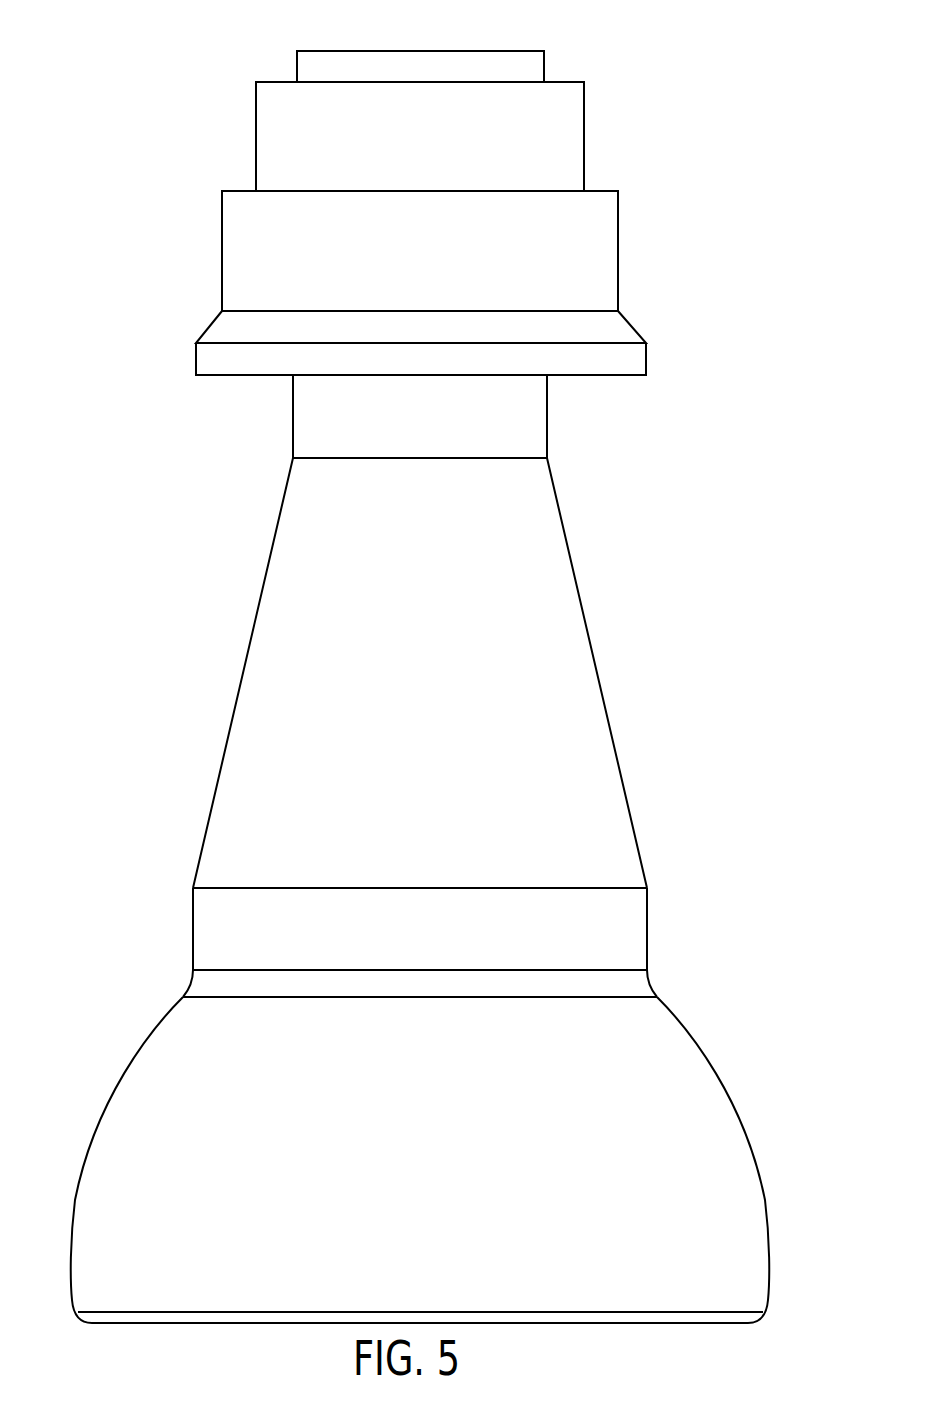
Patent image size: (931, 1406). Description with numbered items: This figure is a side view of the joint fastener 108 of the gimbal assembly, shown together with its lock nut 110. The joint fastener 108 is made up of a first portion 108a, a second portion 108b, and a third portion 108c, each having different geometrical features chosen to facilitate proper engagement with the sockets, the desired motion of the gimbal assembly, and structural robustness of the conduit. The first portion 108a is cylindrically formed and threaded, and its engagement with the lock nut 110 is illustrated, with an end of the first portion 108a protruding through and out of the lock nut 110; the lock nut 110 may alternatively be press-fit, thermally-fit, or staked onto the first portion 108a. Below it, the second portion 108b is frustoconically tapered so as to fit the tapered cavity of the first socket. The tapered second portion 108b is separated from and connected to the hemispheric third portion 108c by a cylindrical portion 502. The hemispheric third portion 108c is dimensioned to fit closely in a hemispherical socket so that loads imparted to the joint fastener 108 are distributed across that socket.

The joint fastener 108 is at (735, 432).
The first portion 108a is at (445, 73).
The lock nut 110 is at (602, 238).
The second portion 108b is at (585, 693).
The cylindrical portion 502 is at (625, 937).
The third portion 108c is at (705, 1088).